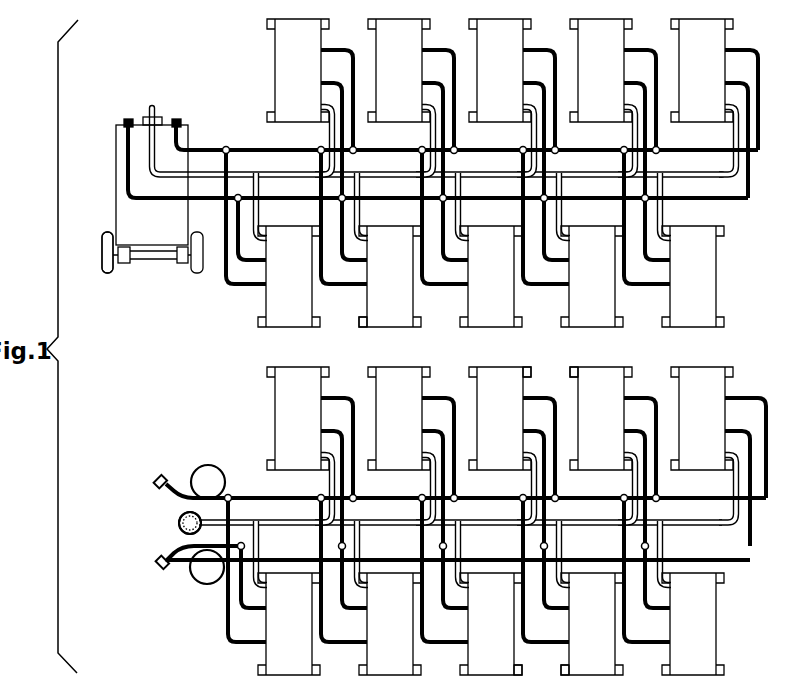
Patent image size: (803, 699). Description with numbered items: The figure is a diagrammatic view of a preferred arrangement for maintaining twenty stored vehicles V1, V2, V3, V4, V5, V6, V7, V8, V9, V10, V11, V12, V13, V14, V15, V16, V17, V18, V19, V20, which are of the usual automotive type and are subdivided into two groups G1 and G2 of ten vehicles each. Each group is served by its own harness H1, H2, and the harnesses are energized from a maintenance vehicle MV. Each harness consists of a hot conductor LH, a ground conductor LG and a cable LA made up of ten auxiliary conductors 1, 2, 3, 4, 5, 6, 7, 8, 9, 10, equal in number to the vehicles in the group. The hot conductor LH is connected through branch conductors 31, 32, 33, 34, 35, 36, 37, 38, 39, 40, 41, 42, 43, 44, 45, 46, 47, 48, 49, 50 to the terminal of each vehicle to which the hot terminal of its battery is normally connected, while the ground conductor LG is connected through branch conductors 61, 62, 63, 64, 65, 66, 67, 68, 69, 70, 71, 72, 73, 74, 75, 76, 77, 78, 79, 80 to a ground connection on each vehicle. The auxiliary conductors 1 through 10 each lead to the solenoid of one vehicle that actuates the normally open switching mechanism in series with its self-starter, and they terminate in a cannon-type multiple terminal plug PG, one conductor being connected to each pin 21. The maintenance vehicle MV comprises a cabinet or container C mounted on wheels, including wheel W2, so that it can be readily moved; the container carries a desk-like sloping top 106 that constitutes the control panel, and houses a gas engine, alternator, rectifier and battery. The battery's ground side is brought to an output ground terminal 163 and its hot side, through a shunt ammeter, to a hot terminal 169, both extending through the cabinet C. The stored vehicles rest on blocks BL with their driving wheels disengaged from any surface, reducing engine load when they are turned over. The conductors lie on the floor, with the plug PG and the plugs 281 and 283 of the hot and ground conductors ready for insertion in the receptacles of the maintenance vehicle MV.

The stored vehicle V1 is at (287, 49).
The stored vehicle V2 is at (388, 49).
The stored vehicle V3 is at (489, 49).
The stored vehicle V4 is at (590, 49).
The stored vehicle V5 is at (691, 49).
The stored vehicle V6 is at (278, 321).
The stored vehicle V7 is at (379, 321).
The stored vehicle V8 is at (480, 321).
The stored vehicle V9 is at (581, 321).
The stored vehicle V10 is at (679, 321).
The stored vehicle V11 is at (285, 397).
The stored vehicle V12 is at (386, 397).
The stored vehicle V13 is at (487, 397).
The stored vehicle V14 is at (588, 397).
The stored vehicle V15 is at (689, 397).
The stored vehicle V16 is at (276, 667).
The stored vehicle V17 is at (377, 667).
The stored vehicle V18 is at (478, 667).
The stored vehicle V19 is at (579, 667).
The stored vehicle V20 is at (679, 667).
The auxiliary conductor 1 is at (329, 137).
The auxiliary conductor 2 is at (430, 137).
The auxiliary conductor 3 is at (531, 137).
The auxiliary conductor 4 is at (632, 137).
The auxiliary conductor 5 is at (733, 137).
The auxiliary conductor 6 is at (258, 220).
The auxiliary conductor 7 is at (359, 220).
The auxiliary conductor 8 is at (460, 220).
The auxiliary conductor 9 is at (561, 220).
The auxiliary conductor 10 is at (662, 220).
The branch conductor 31 is at (345, 136).
The branch conductor 32 is at (446, 136).
The branch conductor 33 is at (547, 136).
The branch conductor 34 is at (648, 136).
The branch conductor 35 is at (751, 129).
The branch conductor 36 is at (259, 263).
The branch conductor 37 is at (360, 263).
The branch conductor 38 is at (461, 263).
The branch conductor 39 is at (562, 263).
The branch conductor 40 is at (663, 263).
The branch conductor 41 is at (329, 433).
The branch conductor 42 is at (430, 433).
The branch conductor 43 is at (531, 433).
The branch conductor 44 is at (632, 433).
The branch conductor 45 is at (737, 433).
The branch conductor 46 is at (262, 613).
The branch conductor 47 is at (363, 613).
The branch conductor 48 is at (464, 613).
The branch conductor 49 is at (565, 613).
The branch conductor 50 is at (666, 613).
The branch conductor 61 is at (328, 52).
The branch conductor 62 is at (429, 52).
The branch conductor 63 is at (530, 52).
The branch conductor 64 is at (631, 52).
The branch conductor 65 is at (732, 52).
The branch conductor 66 is at (259, 286).
The branch conductor 67 is at (360, 286).
The branch conductor 68 is at (461, 286).
The branch conductor 69 is at (562, 286).
The branch conductor 70 is at (663, 286).
The branch conductor 71 is at (329, 399).
The branch conductor 72 is at (430, 399).
The branch conductor 73 is at (531, 399).
The branch conductor 74 is at (632, 399).
The branch conductor 75 is at (733, 399).
The branch conductor 76 is at (257, 646).
The branch conductor 77 is at (358, 646).
The branch conductor 78 is at (459, 646).
The branch conductor 79 is at (560, 646).
The branch conductor 80 is at (661, 646).
The harness H1 is at (391, 170).
The harness H2 is at (491, 518).
The ground conductor LG is at (263, 148).
The hot conductor LH is at (271, 197).
The cable LA is at (512, 179).
The group of stored vehicles G1 is at (495, 194).
The group of stored vehicles G2 is at (500, 535).
The block BL is at (358, 325).
The cabinet C is at (143, 231).
The maintenance vehicle MV is at (139, 300).
The wheel W2 is at (107, 274).
The hot terminal 169 is at (128, 117).
The sloping top 106 is at (162, 119).
The output ground terminal 163 is at (178, 118).
The multiple terminal plug PG is at (185, 514).
The pin 21 is at (179, 525).
The plug 283 is at (150, 481).
The plug 281 is at (158, 568).